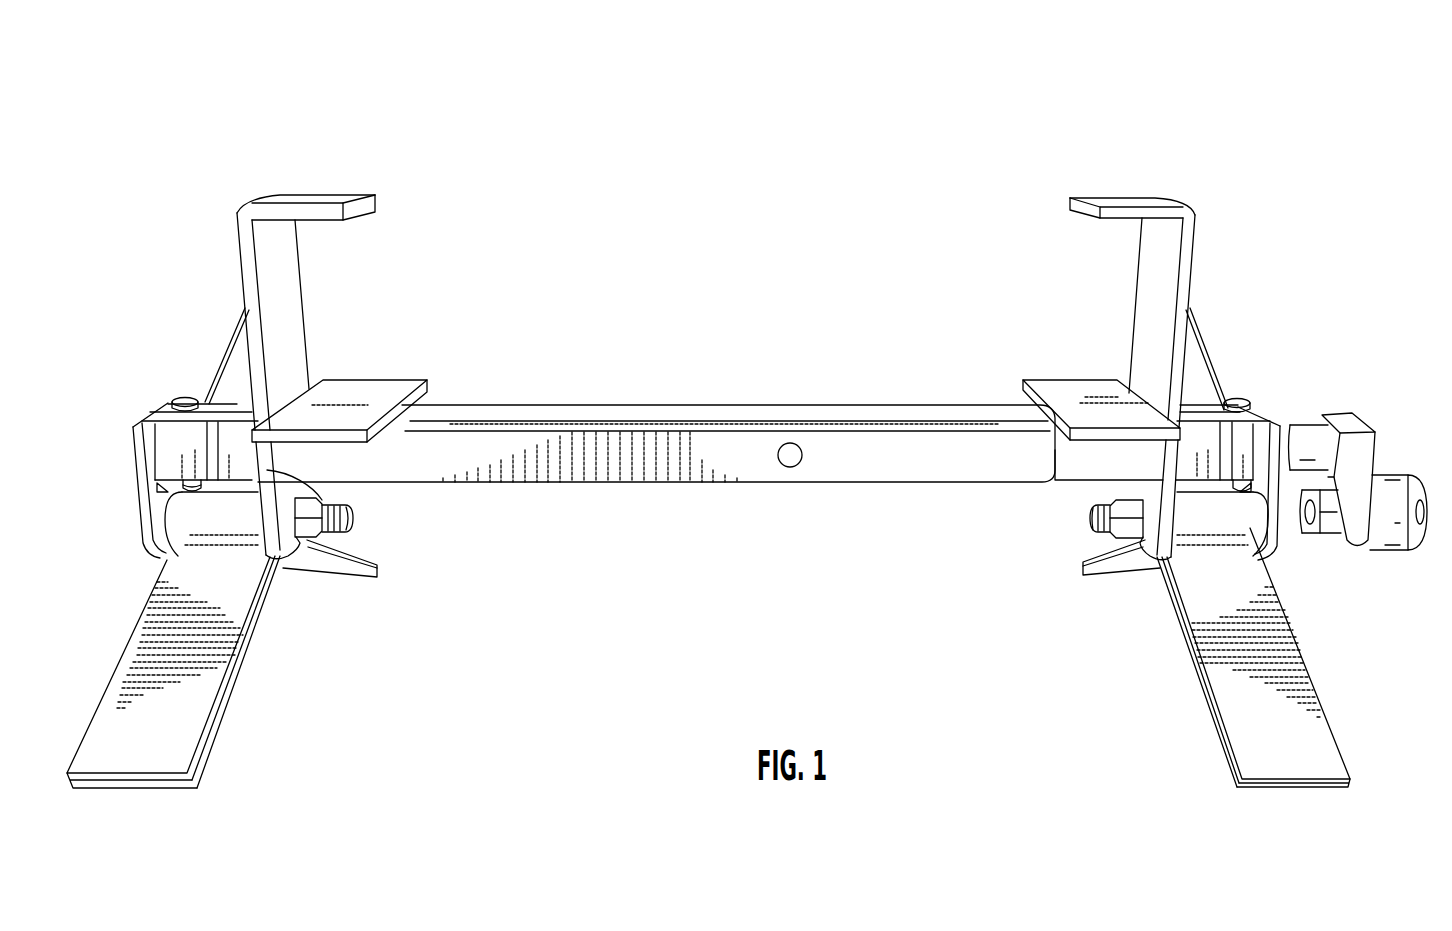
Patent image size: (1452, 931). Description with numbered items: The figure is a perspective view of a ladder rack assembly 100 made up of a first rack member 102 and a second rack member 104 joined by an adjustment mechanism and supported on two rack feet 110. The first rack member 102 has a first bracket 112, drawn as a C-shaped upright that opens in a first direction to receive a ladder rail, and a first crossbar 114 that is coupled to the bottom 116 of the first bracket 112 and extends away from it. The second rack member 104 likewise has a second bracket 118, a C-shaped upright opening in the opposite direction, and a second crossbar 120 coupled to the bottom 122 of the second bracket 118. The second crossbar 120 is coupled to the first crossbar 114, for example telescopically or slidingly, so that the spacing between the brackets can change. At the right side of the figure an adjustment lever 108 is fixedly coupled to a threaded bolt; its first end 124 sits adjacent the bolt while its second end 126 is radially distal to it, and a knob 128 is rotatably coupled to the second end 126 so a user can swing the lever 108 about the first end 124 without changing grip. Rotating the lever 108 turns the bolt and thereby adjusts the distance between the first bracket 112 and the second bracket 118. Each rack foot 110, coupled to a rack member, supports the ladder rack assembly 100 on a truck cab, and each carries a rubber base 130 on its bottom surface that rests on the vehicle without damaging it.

The ladder rack assembly 100 is at (478, 172).
The first rack member 102 is at (222, 443).
The second rack member 104 is at (1228, 410).
The adjustment lever 108 is at (1353, 458).
The rack foot 110 is at (233, 582).
The first bracket 112 is at (283, 320).
The first crossbar 114 is at (520, 443).
The bottom of the first bracket 116 is at (353, 520).
The second bracket 118 is at (1160, 268).
The second crossbar 120 is at (1078, 436).
The bottom of the second bracket 122 is at (1170, 460).
The first end of the adjustment lever 124 is at (1333, 425).
The second end of the adjustment lever 126 is at (1332, 534).
The knob 128 is at (1392, 532).
The rubber base 130 is at (207, 762).